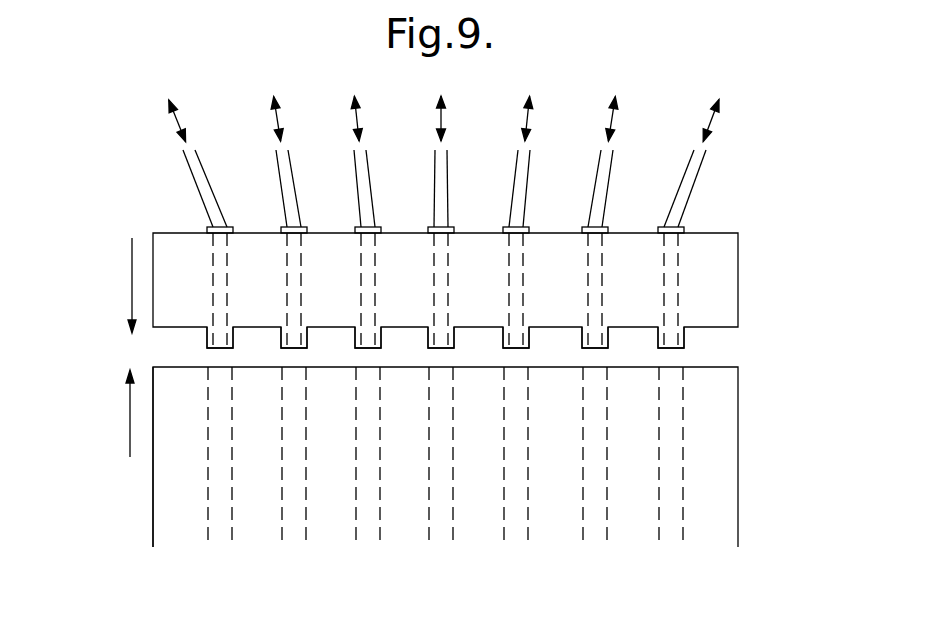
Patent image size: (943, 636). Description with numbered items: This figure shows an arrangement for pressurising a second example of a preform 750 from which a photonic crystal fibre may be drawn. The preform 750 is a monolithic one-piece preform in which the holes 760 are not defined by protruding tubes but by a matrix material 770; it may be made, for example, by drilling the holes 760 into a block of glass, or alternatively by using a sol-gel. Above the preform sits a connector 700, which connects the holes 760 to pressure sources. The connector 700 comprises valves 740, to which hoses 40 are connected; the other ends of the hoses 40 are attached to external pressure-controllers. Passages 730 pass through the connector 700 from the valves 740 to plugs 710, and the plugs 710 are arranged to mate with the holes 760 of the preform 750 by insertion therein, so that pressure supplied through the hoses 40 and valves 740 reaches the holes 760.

The hose 40 is at (697, 180).
The connector 700 is at (105, 350).
The plug 710 is at (686, 338).
The passage 730 is at (223, 282).
The valve 740 is at (207, 230).
The preform 750 is at (740, 490).
The hole 760 is at (668, 420).
The matrix material 770 is at (178, 482).